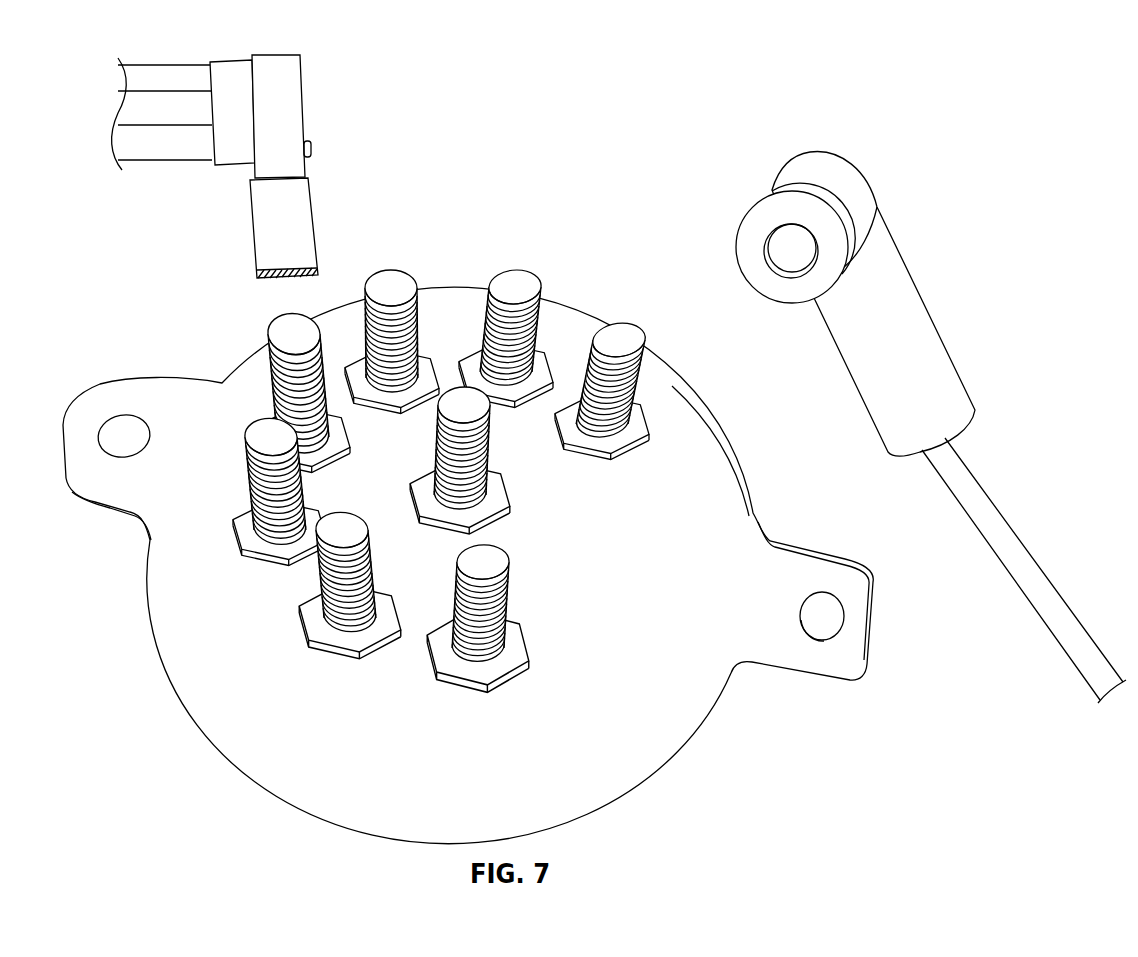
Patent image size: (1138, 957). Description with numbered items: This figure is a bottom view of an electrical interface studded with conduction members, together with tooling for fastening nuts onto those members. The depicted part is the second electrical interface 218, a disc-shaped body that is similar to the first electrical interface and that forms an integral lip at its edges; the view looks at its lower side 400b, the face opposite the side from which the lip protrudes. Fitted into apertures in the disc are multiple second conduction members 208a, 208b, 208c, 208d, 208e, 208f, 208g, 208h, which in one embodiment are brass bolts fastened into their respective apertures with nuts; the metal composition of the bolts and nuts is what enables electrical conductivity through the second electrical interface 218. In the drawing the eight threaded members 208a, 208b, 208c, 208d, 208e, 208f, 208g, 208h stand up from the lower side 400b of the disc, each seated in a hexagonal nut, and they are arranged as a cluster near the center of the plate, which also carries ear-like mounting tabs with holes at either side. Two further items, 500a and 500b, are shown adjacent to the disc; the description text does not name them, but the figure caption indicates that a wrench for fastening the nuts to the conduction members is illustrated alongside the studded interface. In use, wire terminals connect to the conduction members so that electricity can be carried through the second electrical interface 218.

The second electrical interface 218 is at (604, 130).
The lower side 400b is at (462, 757).
The first connector 500a is at (303, 93).
The second connector 500b is at (798, 180).
The second conduction member 208a is at (463, 412).
The second conduction member 208b is at (510, 590).
The second conduction member 208c is at (320, 560).
The second conduction member 208d is at (260, 437).
The second conduction member 208e is at (293, 327).
The second conduction member 208f is at (393, 280).
The second conduction member 208g is at (518, 278).
The second conduction member 208h is at (620, 337).